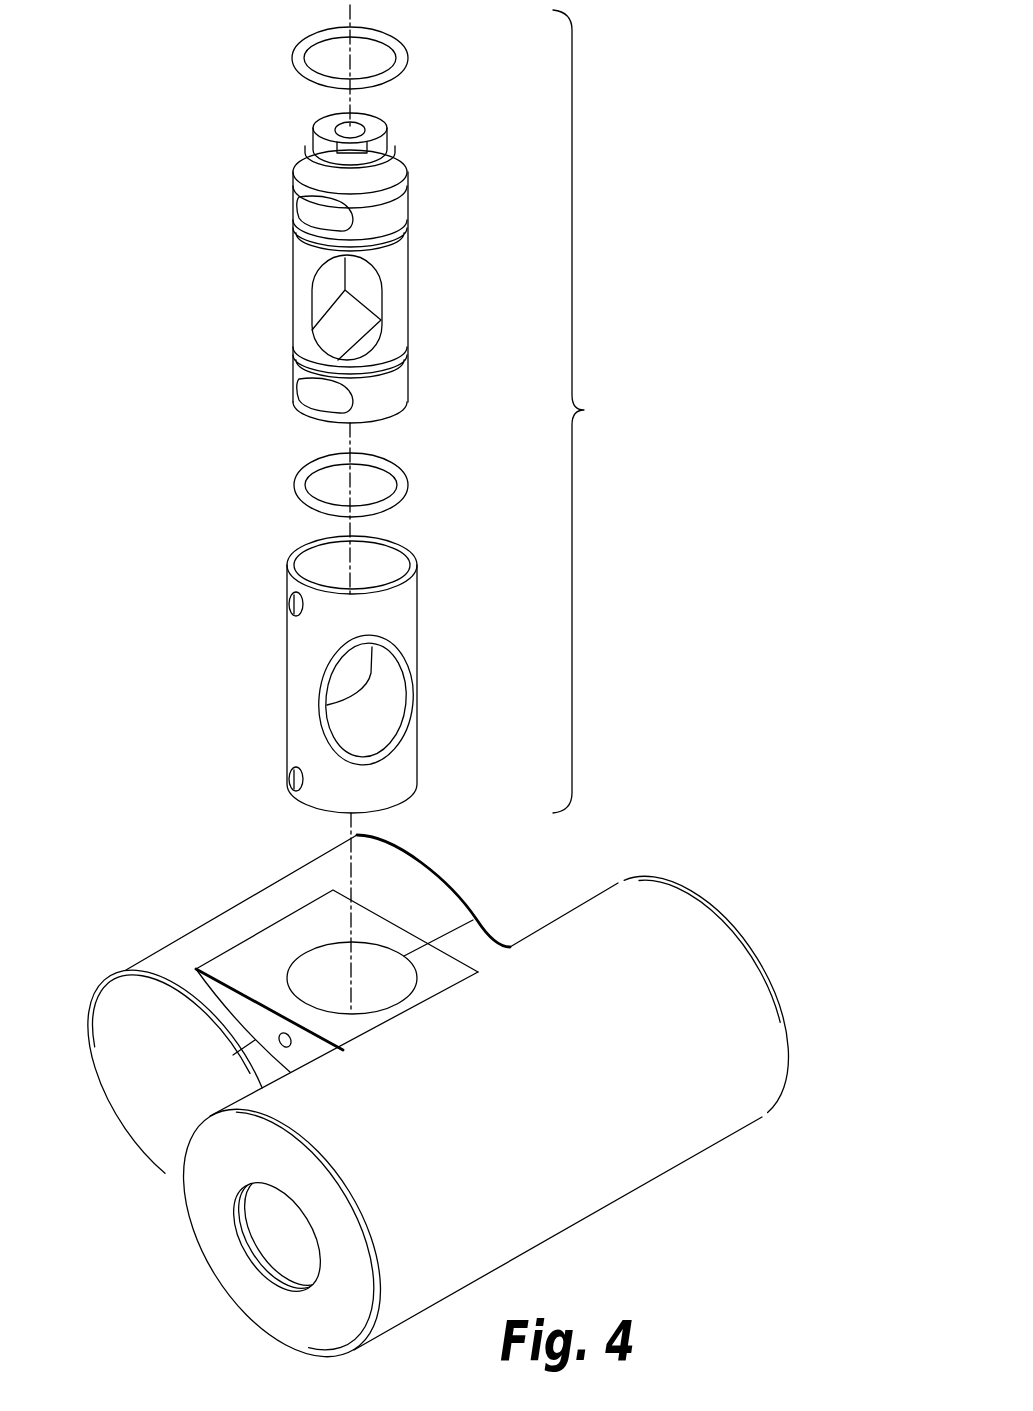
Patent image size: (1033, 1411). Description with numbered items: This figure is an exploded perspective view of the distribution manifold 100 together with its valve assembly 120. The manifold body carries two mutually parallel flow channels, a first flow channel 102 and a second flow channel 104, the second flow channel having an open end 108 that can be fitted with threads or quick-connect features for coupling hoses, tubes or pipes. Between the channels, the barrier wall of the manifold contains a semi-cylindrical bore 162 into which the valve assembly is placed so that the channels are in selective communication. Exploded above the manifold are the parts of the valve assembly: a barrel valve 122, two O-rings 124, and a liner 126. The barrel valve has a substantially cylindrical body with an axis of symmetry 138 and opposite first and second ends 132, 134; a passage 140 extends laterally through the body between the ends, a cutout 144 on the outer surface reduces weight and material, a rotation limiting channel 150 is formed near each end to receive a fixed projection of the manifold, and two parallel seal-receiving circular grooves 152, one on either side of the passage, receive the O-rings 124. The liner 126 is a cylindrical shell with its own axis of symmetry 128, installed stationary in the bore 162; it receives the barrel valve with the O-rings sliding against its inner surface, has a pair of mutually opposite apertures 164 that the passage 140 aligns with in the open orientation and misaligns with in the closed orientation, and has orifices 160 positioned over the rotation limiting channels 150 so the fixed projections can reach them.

The distribution manifold 100 is at (437, 1093).
The first flow channel 102 is at (203, 923).
The second flow channel 104 is at (640, 1188).
The open end 108 is at (268, 1258).
The valve assembly 120 is at (597, 411).
The barrel valve 122 is at (359, 313).
The O-ring 124 is at (410, 54).
The liner 126 is at (356, 666).
The axis of symmetry of the liner 128 is at (350, 563).
The first end 132 is at (318, 426).
The second end 134 is at (330, 128).
The axis of symmetry 138 is at (360, 445).
The passage 140 is at (358, 297).
The cutout 144 is at (295, 285).
The rotation limiting channel 150 is at (330, 218).
The seal-receiving circular groove 152 is at (393, 237).
The orifice 160 is at (290, 602).
The semi-cylindrical bore 162 is at (367, 128).
The aperture 164 is at (375, 670).